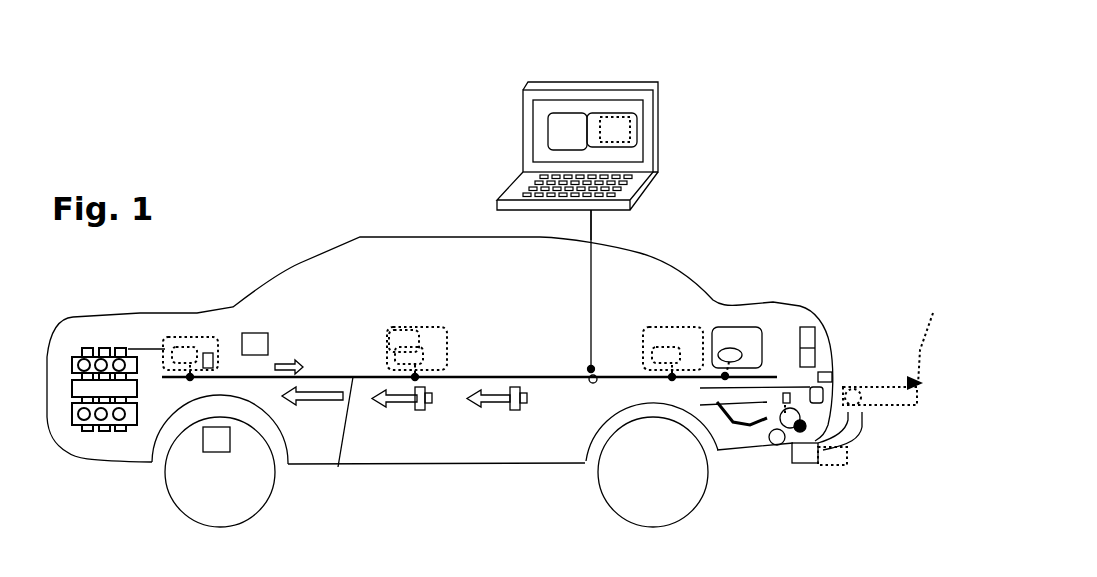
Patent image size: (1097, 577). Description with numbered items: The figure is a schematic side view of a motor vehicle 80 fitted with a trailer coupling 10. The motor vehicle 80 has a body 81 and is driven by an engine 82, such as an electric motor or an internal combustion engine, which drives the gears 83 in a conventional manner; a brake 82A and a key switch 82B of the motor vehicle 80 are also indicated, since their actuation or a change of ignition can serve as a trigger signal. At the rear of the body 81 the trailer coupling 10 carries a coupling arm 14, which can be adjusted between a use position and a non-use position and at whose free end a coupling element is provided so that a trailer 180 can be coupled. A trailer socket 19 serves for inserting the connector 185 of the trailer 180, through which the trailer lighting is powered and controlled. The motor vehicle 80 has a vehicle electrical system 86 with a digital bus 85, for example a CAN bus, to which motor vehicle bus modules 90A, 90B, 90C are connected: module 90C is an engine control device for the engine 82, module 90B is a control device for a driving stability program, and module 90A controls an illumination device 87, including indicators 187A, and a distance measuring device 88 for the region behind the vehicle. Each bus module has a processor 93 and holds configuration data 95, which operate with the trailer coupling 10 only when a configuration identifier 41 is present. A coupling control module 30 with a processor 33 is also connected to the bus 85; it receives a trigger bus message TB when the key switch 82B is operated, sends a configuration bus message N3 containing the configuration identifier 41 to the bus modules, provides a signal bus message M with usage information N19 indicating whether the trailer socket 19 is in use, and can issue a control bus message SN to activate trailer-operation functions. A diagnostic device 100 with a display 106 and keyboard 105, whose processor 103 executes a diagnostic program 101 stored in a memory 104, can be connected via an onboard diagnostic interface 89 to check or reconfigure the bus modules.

The trailer coupling 10 is at (870, 310).
The coupling arm 14 is at (852, 423).
The trailer socket 19 is at (805, 460).
The coupling control module 30 is at (760, 320).
The processor 33 is at (733, 348).
The configuration identifier 41 is at (208, 365).
The motor vehicle 80 is at (297, 259).
The body 81 is at (143, 317).
The engine 82 is at (80, 355).
The brake 82A is at (210, 440).
The key switch 82B is at (253, 338).
The gears 83 is at (253, 487).
The digital bus 85 is at (337, 463).
The vehicle electrical system 86 is at (516, 376).
The illumination device 87 is at (813, 332).
The distance measuring device 88 is at (832, 377).
The onboard diagnostic interface 89 is at (589, 381).
The motor vehicle bus module 90A is at (685, 328).
The motor vehicle bus module 90B is at (430, 328).
The motor vehicle bus module 90C is at (213, 335).
The processor 93 is at (387, 340).
The configuration data 95 is at (405, 330).
The diagnostic device 100 is at (662, 78).
The diagnostic program 101 is at (617, 117).
The processor 103 is at (558, 120).
The memory 104 is at (633, 132).
The keyboard 105 is at (512, 188).
The display 106 is at (533, 137).
The trailer 180 is at (899, 347).
The connector 185 is at (842, 468).
The memory unit 187A is at (815, 358).
The signal bus message M is at (412, 403).
The usage information N19 is at (427, 407).
The configuration bus message N3 is at (507, 402).
The control bus message SN is at (325, 401).
The trigger bus message TB is at (290, 360).